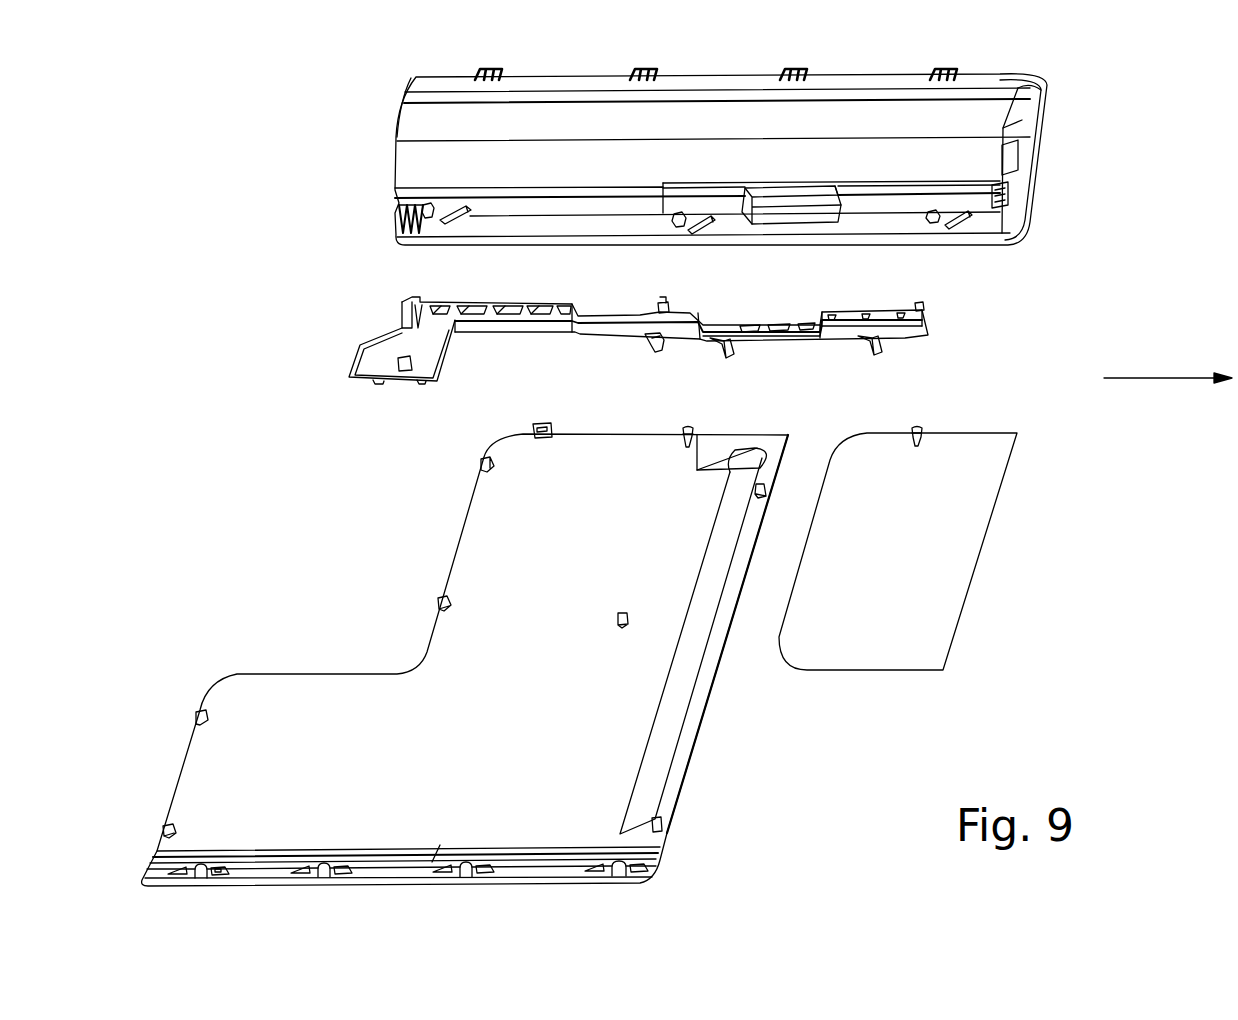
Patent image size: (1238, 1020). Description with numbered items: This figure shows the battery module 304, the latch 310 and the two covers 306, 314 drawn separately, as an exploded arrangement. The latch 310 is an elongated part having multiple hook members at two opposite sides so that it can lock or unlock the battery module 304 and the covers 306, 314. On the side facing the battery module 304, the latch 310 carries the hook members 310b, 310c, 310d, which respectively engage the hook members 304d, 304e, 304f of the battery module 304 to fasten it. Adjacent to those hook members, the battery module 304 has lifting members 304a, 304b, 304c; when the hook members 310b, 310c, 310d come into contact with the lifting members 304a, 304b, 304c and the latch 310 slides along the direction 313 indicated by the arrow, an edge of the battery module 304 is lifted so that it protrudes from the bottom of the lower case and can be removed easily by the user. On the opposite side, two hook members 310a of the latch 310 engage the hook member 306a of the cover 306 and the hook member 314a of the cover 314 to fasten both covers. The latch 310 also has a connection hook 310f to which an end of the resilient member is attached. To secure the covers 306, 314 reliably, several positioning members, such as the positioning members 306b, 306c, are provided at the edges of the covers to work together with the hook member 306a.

The battery module 304 is at (985, 122).
The lifting member 304a is at (965, 222).
The lifting member 304b is at (700, 238).
The lifting member 304c is at (448, 235).
The hook member 304d is at (932, 212).
The hook member 304e is at (680, 213).
The hook member 304f is at (433, 204).
The latch 310 is at (913, 330).
The hook member 310a is at (730, 343).
The hook member 310b is at (920, 305).
The hook member 310c is at (655, 300).
The hook member 310d is at (412, 298).
The connection hook 310f is at (660, 343).
The cover 306 is at (630, 728).
The hook member 306a is at (688, 425).
The positioning member 306b is at (442, 604).
The positioning member 306c is at (167, 829).
The cover 314 is at (958, 555).
The hook member 314a is at (917, 428).
The direction 313 is at (1153, 378).